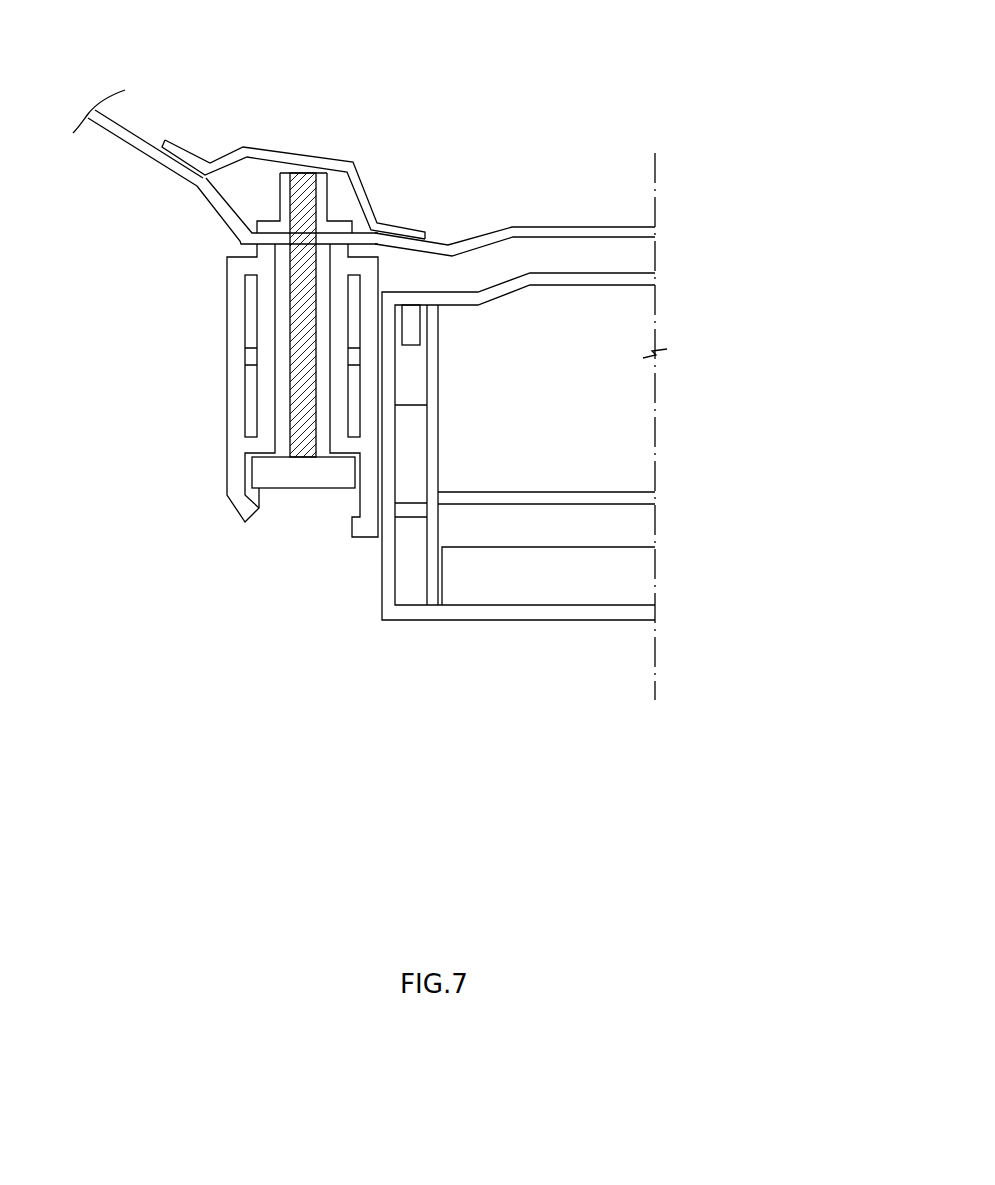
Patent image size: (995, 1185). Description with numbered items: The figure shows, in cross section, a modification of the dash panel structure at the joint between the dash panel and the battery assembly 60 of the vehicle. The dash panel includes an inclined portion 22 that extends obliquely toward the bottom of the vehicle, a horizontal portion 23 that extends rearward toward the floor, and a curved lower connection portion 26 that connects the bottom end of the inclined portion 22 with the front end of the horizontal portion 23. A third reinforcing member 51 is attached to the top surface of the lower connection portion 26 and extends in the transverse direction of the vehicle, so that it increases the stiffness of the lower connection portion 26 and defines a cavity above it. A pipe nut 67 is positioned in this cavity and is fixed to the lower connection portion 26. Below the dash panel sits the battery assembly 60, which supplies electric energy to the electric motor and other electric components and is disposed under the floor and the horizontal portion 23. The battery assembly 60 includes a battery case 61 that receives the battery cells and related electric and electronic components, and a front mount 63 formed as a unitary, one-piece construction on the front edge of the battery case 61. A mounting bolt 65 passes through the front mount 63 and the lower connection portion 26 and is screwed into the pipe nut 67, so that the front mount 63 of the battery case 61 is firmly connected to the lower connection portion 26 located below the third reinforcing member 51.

The inclined portion 22 is at (130, 133).
The horizontal portion 23 is at (541, 228).
The lower connection portion 26 is at (210, 224).
The third reinforcing member 51 is at (340, 160).
The battery assembly 60 is at (507, 636).
The battery case 61 is at (463, 582).
The front mount 63 is at (227, 407).
The mounting bolt 65 is at (305, 477).
The pipe nut 67 is at (282, 197).